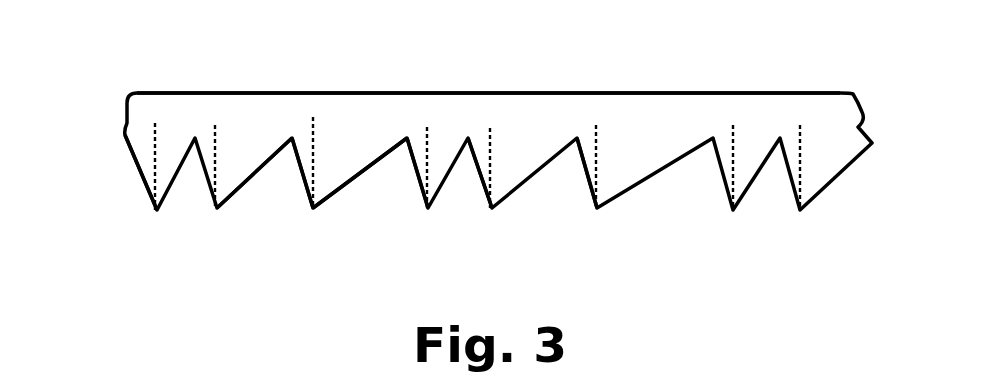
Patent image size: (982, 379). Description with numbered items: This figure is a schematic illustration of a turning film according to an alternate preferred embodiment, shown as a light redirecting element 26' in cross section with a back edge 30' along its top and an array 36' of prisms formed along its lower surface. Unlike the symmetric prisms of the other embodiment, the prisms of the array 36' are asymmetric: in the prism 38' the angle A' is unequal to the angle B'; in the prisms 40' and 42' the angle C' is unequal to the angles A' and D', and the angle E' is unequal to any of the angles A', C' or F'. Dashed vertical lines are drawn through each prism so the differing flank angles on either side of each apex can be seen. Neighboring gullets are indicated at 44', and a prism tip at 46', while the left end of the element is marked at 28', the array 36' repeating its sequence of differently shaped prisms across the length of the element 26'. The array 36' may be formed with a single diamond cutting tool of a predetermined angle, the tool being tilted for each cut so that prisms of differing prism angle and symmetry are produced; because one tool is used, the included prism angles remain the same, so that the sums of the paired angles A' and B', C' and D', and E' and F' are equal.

The light redirecting element 26' is at (498, 115).
The leading end edge 28' is at (118, 199).
The back edge 30' is at (488, 66).
The array of prisms 36' is at (216, 221).
The prism 38' is at (429, 211).
The prism 40' is at (505, 207).
The prism 42' is at (611, 203).
The gullet 44' is at (360, 206).
The tooth tip 46' is at (280, 130).